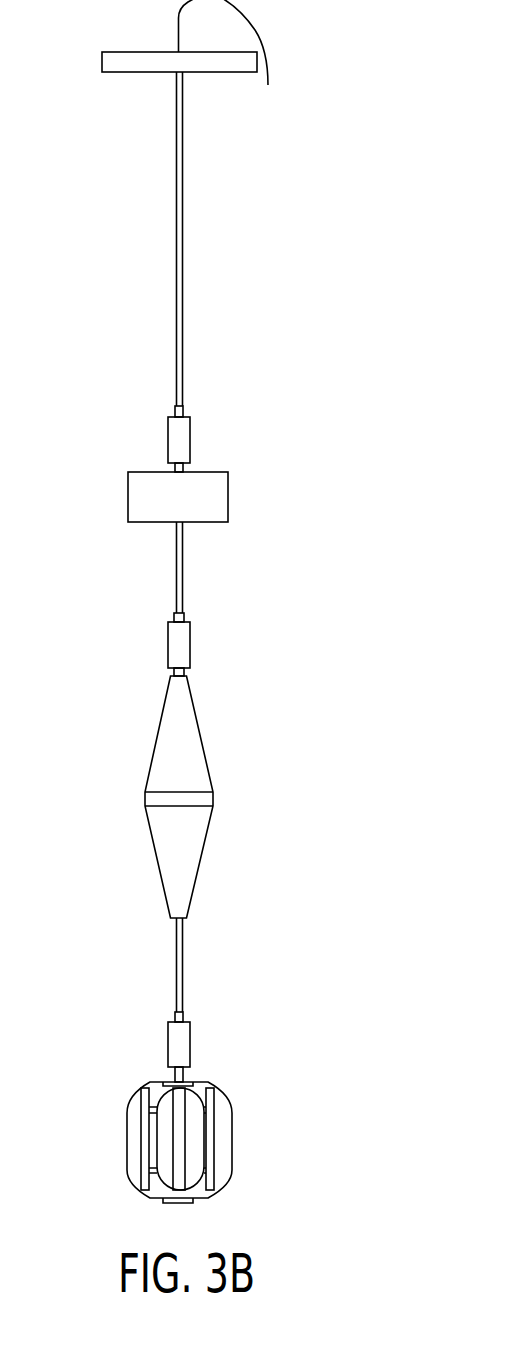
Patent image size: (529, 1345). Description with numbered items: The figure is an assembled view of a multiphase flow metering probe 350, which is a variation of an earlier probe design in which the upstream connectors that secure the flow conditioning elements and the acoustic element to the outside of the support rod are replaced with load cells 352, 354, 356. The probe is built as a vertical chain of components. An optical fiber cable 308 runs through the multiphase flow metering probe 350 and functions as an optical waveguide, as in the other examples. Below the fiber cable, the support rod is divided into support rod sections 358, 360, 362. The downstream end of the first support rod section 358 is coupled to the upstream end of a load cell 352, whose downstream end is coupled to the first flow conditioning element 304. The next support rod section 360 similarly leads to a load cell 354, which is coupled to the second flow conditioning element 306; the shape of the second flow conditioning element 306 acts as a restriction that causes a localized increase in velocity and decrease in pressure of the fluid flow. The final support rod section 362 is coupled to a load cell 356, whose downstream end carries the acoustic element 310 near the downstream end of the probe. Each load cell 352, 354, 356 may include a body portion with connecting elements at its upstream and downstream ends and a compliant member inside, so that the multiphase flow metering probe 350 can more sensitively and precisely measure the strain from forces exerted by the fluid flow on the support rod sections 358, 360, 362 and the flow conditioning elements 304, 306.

The multiphase flow metering probe 350 is at (62, 101).
The optical fiber cable 308 is at (265, 43).
The support rod section 358 is at (183, 303).
The load cell 352 is at (168, 433).
The first flow conditioning element 304 is at (218, 498).
The support rod section 360 is at (183, 580).
The load cell 354 is at (168, 638).
The second flow conditioning element 306 is at (193, 773).
The support rod section 362 is at (183, 963).
The load cell 356 is at (168, 1038).
The acoustic element 310 is at (220, 1137).